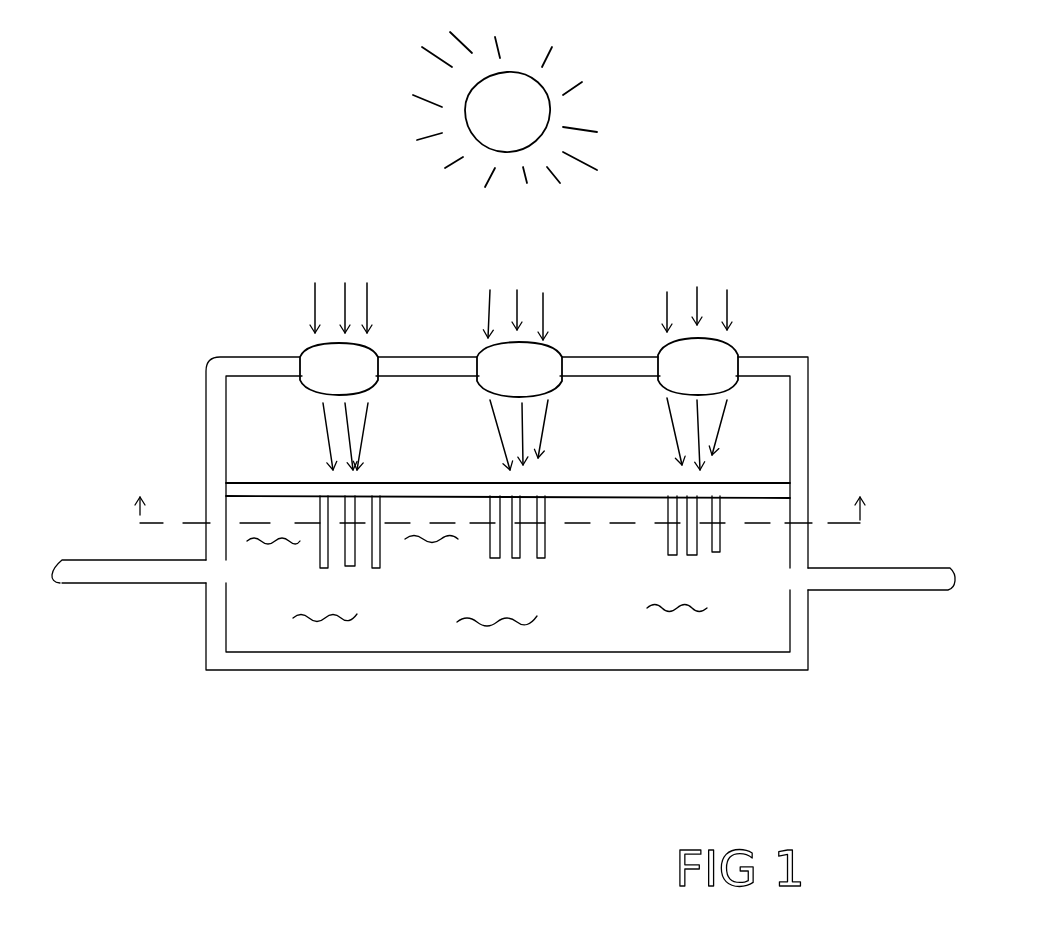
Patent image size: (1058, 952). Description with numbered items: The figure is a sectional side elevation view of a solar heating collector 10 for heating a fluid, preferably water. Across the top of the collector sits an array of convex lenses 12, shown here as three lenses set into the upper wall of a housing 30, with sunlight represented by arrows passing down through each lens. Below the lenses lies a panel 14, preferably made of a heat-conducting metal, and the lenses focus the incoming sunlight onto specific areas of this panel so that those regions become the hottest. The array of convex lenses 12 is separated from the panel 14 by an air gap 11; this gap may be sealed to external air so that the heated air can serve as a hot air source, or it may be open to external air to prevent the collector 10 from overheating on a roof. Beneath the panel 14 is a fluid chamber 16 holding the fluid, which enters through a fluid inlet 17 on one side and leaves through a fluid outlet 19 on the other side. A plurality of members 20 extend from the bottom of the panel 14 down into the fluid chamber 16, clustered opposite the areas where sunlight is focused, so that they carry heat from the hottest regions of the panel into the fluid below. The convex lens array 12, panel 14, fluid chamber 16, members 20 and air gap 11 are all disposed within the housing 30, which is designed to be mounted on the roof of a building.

The solar heating collector 10 is at (852, 300).
The air gap 11 is at (260, 440).
The array of convex lenses 12 is at (317, 363).
The panel 14 is at (603, 483).
The fluid chamber 16 is at (266, 623).
The fluid inlet 17 is at (198, 592).
The fluid outlet 19 is at (815, 605).
The members 20 is at (365, 567).
The housing 30 is at (810, 399).